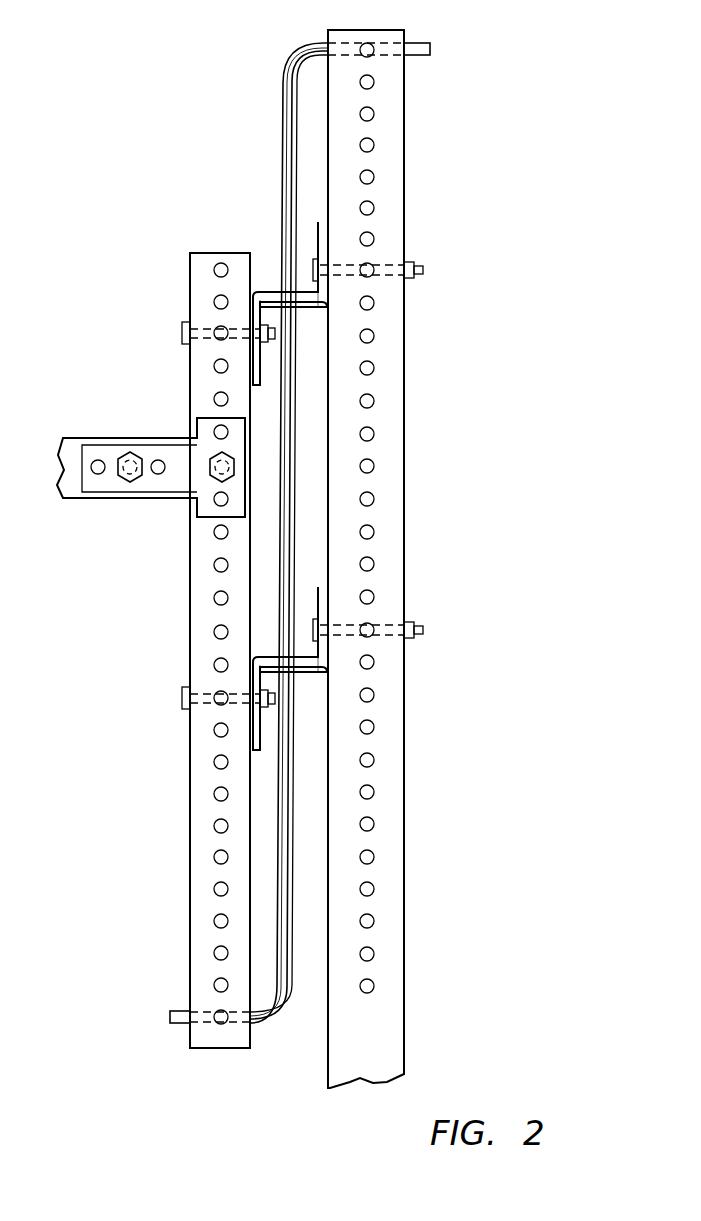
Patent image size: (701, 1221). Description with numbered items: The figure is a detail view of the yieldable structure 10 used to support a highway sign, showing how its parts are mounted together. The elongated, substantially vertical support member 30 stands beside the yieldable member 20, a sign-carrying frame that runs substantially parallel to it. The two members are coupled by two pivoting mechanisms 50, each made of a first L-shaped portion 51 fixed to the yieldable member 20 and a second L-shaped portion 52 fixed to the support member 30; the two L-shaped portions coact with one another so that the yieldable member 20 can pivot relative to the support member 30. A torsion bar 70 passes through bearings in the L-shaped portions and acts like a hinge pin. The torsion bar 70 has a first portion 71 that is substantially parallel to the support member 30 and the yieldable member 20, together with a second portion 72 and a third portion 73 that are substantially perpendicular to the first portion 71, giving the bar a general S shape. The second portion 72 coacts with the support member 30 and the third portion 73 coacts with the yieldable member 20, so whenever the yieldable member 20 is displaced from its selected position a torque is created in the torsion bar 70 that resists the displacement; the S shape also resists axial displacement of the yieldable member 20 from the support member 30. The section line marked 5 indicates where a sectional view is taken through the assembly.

The yieldable structure 10 is at (492, 386).
The yieldable member 20 is at (190, 573).
The support member 30 is at (407, 592).
The pivoting mechanism 50 is at (313, 312).
The first L-shaped portion 51 is at (268, 291).
The second L-shaped portion 52 is at (302, 316).
The torsion bar 70 is at (283, 101).
The first portion 71 is at (297, 502).
The second portion 72 is at (427, 43).
The third portion 73 is at (173, 1023).
The section line 5- 5 is at (155, 193).